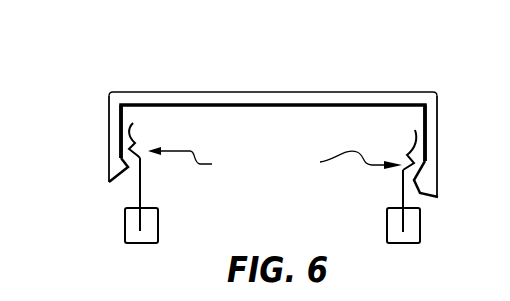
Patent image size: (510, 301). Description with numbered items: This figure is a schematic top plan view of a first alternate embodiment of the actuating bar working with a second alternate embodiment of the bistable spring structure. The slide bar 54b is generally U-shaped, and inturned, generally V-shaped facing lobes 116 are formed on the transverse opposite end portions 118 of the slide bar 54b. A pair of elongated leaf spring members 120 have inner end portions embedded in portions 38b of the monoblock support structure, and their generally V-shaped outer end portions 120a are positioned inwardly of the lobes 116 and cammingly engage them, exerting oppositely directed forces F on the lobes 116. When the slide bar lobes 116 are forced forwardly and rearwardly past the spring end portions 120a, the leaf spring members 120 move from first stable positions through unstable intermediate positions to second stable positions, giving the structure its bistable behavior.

The slide bar 54b is at (270, 92).
The transverse opposite end portions 118 is at (108, 123).
The lobes 116 is at (109, 173).
The leaf spring members 120 is at (141, 195).
The outer end portions 120a is at (135, 125).
The portions of the monoblock support structure 38b is at (124, 219).
The forces F is at (275, 162).